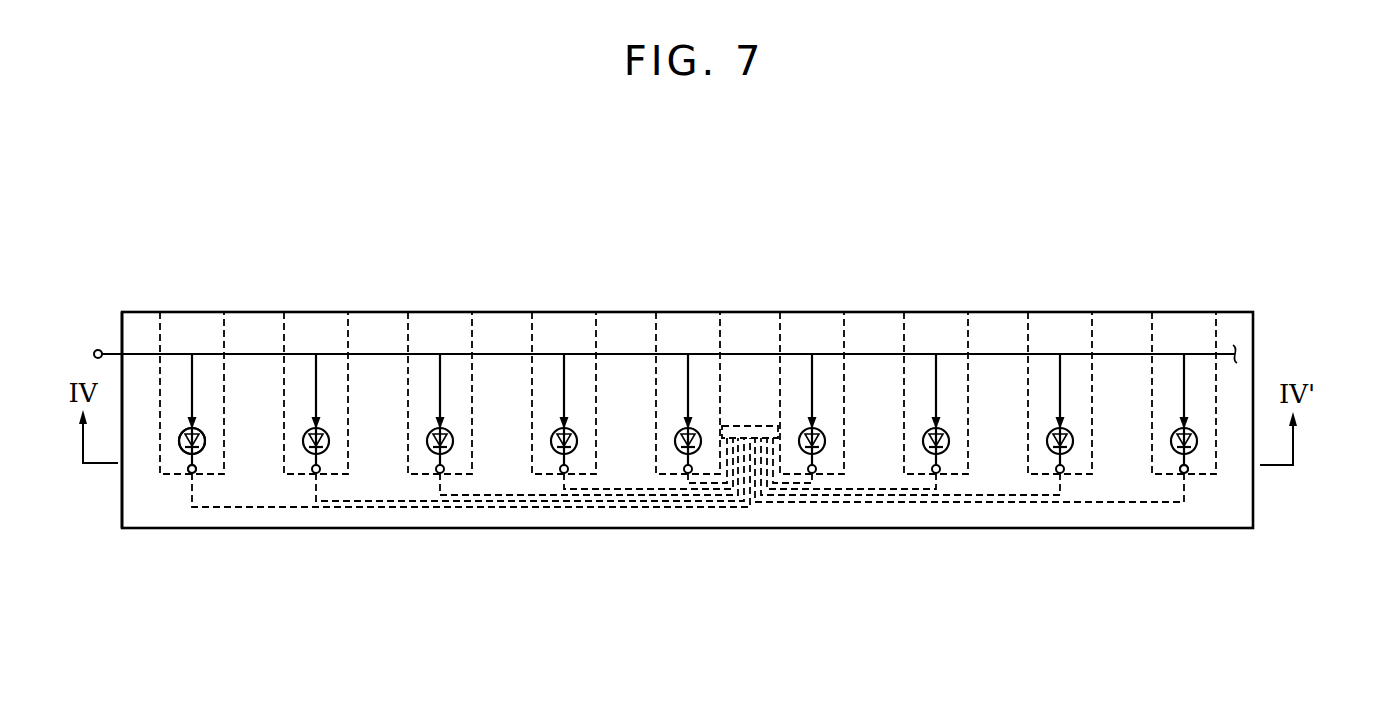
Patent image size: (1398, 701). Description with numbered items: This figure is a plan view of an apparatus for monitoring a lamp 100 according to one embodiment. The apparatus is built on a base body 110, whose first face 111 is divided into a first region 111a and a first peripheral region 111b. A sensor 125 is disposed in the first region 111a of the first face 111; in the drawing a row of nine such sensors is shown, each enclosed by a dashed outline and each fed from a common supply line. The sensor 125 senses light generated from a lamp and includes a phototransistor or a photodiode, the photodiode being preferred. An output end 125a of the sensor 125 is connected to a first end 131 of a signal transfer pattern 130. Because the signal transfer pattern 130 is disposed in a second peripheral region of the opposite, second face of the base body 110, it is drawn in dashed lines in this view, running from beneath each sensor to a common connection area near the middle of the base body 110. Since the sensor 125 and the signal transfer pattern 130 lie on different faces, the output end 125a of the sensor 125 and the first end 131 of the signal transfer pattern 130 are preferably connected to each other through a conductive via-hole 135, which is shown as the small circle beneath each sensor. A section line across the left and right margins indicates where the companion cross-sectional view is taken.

The light source module 100 is at (637, 276).
The base body 110 is at (1286, 500).
The first face 111 is at (1235, 322).
The first region 111a is at (328, 321).
The first peripheral region 111b is at (138, 320).
The sensor 125 is at (205, 415).
The output end 125a is at (181, 455).
The signal transfer pattern 130 is at (1110, 503).
The first end 131 is at (190, 475).
The conductive via-hole 135 is at (1188, 474).